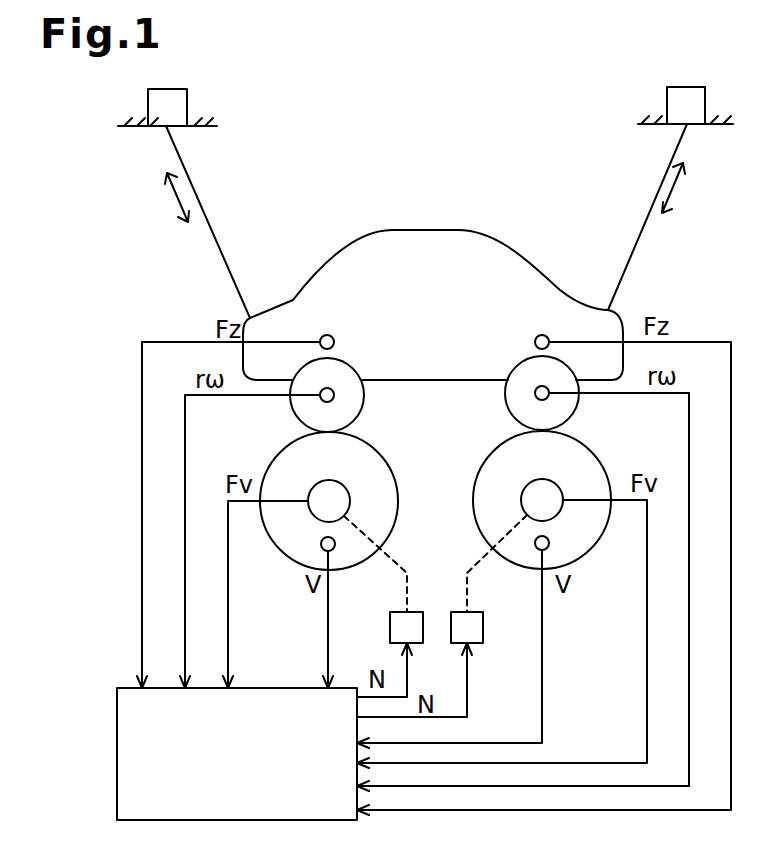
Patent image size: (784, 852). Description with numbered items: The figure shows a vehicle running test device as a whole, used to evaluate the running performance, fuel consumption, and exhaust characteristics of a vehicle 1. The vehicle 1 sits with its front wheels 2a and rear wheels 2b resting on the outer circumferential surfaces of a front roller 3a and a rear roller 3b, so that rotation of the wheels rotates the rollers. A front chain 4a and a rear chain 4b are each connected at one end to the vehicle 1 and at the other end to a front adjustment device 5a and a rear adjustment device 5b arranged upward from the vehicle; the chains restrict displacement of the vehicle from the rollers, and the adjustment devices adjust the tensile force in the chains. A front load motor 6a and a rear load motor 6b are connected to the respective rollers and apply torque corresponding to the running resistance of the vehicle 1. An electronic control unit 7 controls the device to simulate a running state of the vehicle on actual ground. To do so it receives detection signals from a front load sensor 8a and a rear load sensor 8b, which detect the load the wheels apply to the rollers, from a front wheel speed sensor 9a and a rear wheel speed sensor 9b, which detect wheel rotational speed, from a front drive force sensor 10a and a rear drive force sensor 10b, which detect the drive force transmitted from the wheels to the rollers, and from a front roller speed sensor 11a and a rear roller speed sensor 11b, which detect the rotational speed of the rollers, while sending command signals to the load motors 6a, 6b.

The vehicle 1 is at (462, 229).
The front wheels 2a is at (362, 404).
The rear wheels 2b is at (578, 404).
The front roller 3a is at (388, 467).
The rear roller 3b is at (604, 466).
The front chain 4a is at (212, 230).
The rear chain 4b is at (628, 268).
The front adjustment device 5a is at (187, 98).
The rear adjustment device 5b is at (705, 95).
The front load motor 6a is at (390, 627).
The rear load motor 6b is at (483, 627).
The electronic control unit 7 is at (117, 708).
The front load sensor 8a is at (331, 336).
The rear load sensor 8b is at (537, 336).
The front wheel speed sensor 9a is at (333, 388).
The rear wheel speed sensor 9b is at (536, 387).
The front drive force sensor 10a is at (335, 482).
The rear drive force sensor 10b is at (548, 481).
The front roller speed sensor 11a is at (321, 546).
The rear roller speed sensor 11b is at (549, 546).